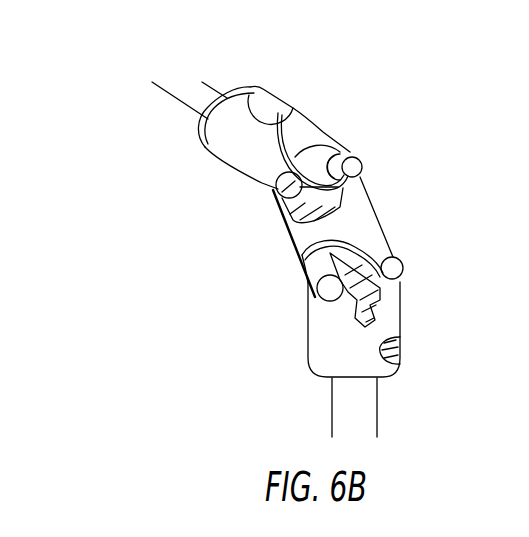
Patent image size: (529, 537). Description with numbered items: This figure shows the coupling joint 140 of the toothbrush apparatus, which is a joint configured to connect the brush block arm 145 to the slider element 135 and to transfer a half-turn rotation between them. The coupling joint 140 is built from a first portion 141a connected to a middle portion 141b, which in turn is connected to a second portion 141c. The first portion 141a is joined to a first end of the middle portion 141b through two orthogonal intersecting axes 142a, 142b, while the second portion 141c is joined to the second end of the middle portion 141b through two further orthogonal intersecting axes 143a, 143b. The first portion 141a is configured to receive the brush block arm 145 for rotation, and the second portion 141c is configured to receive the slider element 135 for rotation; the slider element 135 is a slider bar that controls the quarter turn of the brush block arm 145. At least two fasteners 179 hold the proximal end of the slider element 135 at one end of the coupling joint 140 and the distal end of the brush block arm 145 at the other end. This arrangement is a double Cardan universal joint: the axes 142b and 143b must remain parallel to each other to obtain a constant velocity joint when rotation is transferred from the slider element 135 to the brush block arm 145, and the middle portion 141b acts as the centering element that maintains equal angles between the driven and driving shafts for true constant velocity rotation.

The slider element 135 is at (370, 403).
The coupling joint 140 is at (186, 271).
The first portion 141a is at (231, 157).
The middle portion 141b is at (297, 245).
The second portion 141c is at (322, 346).
The orthogonal intersecting axis 142a is at (281, 196).
The orthogonal intersecting axis 142b is at (353, 166).
The orthogonal intersecting axis 143a is at (330, 288).
The orthogonal intersecting axis 143b is at (392, 268).
The brush block arm 145 is at (171, 96).
The fasteners 179 is at (266, 97).